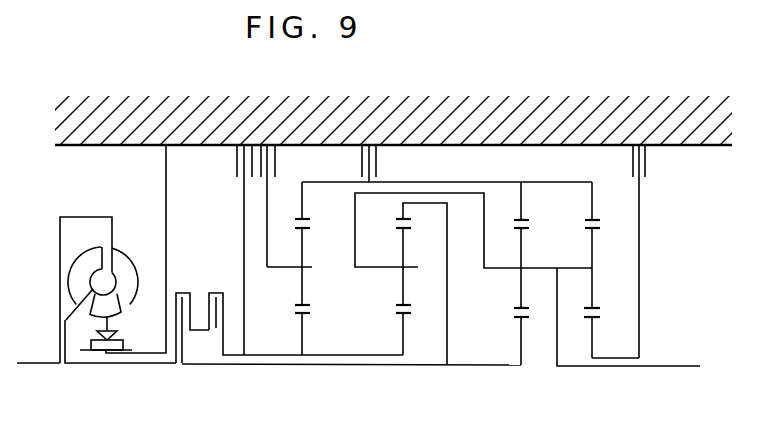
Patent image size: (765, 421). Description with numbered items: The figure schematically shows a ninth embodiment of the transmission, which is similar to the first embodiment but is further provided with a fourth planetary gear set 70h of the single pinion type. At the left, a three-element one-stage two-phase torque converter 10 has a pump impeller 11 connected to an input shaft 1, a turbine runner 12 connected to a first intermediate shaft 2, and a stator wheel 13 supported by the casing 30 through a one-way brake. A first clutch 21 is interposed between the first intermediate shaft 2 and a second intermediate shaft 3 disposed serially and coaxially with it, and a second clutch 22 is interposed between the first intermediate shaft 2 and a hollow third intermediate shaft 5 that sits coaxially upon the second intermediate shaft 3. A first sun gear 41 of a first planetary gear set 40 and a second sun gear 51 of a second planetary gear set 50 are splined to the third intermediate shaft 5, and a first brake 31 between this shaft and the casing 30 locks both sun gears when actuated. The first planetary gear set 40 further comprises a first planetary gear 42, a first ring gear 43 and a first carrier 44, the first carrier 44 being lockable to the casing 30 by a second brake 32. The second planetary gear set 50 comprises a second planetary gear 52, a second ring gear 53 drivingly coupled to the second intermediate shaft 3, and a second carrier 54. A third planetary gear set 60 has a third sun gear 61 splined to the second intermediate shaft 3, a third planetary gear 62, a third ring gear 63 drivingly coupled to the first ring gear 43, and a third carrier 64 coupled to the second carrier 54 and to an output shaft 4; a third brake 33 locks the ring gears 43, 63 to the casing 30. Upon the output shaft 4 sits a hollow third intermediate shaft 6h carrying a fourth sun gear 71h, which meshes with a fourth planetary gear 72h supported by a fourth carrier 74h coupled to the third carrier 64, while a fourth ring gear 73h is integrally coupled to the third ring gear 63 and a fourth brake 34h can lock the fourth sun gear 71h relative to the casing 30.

The input shaft 1 is at (30, 365).
The first intermediate shaft 2 is at (111, 365).
The second intermediate shaft 3 is at (211, 366).
The output shaft 4 is at (686, 368).
The third intermediate shaft 5 is at (271, 357).
The third intermediate shaft 6h is at (630, 358).
The torque converter 10 is at (132, 262).
The pump impeller 11 is at (128, 288).
The turbine runner 12 is at (83, 272).
The stator wheel 13 is at (102, 310).
The first clutch 21 is at (182, 290).
The second clutch 22 is at (216, 290).
The casing 30 is at (355, 88).
The first brake 31 is at (241, 142).
The second brake 32 is at (268, 142).
The third brake 33 is at (372, 142).
The fourth brake 34h is at (640, 142).
The first planetary gear set 40 is at (426, 293).
The first sun gear 41 is at (316, 330).
The first planetary gear 42 is at (304, 288).
The first ring gear 43 is at (304, 200).
The first carrier 44 is at (281, 269).
The second planetary gear set 50 is at (473, 281).
The second sun gear 51 is at (405, 329).
The second planetary gear 52 is at (405, 288).
The second ring gear 53 is at (423, 261).
The second carrier 54 is at (370, 266).
The third planetary gear set 60 is at (540, 293).
The third sun gear 61 is at (532, 336).
The third planetary gear 62 is at (519, 283).
The third ring gear 63 is at (557, 205).
The third carrier 64 is at (500, 264).
The fourth planetary gear set 70h is at (638, 293).
The fourth sun gear 71h is at (592, 333).
The fourth planetary gear 72h is at (592, 293).
The fourth ring gear 73h is at (592, 203).
The fourth carrier 74h is at (597, 268).